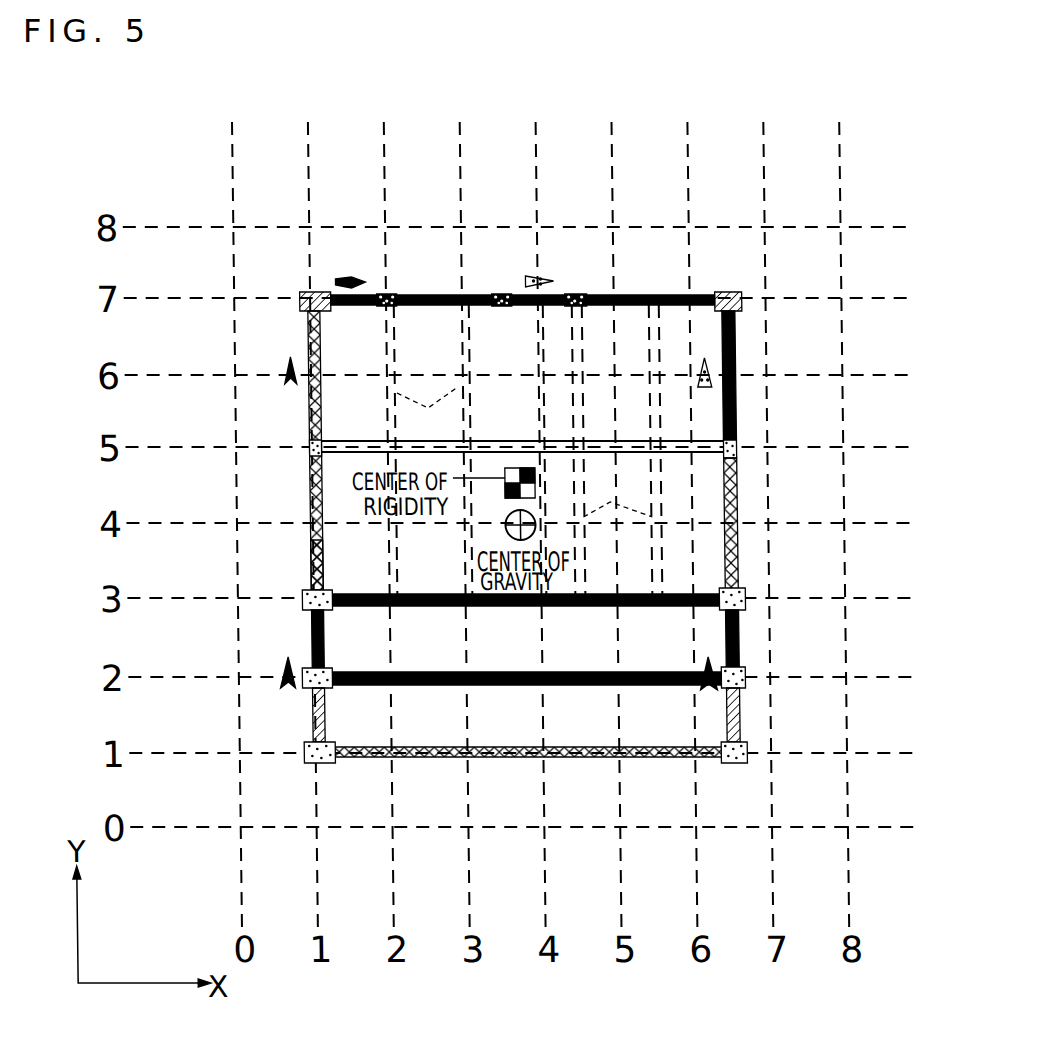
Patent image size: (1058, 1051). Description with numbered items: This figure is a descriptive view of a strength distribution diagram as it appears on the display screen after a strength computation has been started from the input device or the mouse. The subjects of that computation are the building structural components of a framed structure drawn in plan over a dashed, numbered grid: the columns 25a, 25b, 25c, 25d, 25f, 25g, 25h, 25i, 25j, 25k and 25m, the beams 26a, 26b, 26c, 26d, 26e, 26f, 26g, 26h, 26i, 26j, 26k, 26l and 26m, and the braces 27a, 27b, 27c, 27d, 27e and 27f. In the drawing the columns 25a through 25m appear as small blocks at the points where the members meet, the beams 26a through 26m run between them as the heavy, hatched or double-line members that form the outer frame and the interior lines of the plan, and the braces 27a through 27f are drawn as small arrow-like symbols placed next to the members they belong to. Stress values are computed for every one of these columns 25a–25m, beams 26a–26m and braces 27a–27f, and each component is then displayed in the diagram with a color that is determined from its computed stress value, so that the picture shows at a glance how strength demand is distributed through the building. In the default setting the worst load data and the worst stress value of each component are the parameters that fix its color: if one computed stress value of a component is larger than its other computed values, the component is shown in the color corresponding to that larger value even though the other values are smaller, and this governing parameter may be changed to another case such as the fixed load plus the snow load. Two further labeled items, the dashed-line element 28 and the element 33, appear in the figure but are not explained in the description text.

The column 25a is at (297, 291).
The column 25b is at (381, 306).
The column 25c is at (511, 306).
The column 25d is at (574, 294).
The column 25f is at (733, 447).
The column 25g is at (313, 452).
The column 25h is at (738, 592).
The column 25i is at (305, 590).
The column 25j is at (737, 688).
The column 25k is at (300, 668).
The column 25m is at (300, 764).
The beam 26a is at (652, 306).
The beam 26b is at (733, 353).
The beam 26c is at (305, 331).
The beam 26d is at (733, 495).
The beam 26e is at (313, 558).
The beam 26f is at (496, 441).
The beam 26g is at (429, 606).
The beam 26h is at (732, 649).
The beam 26i is at (311, 655).
The beam 26j is at (718, 716).
The beam 26k is at (316, 718).
The beam 26l is at (493, 686).
The beam 26m is at (501, 758).
The brace 27a is at (281, 386).
The brace 27b is at (334, 282).
The brace 27c is at (522, 281).
The brace 27d is at (698, 391).
The brace 27e is at (693, 660).
The brace 27f is at (276, 690).
The brace 28 is at (525, 452).
The corner joint 33 is at (699, 285).